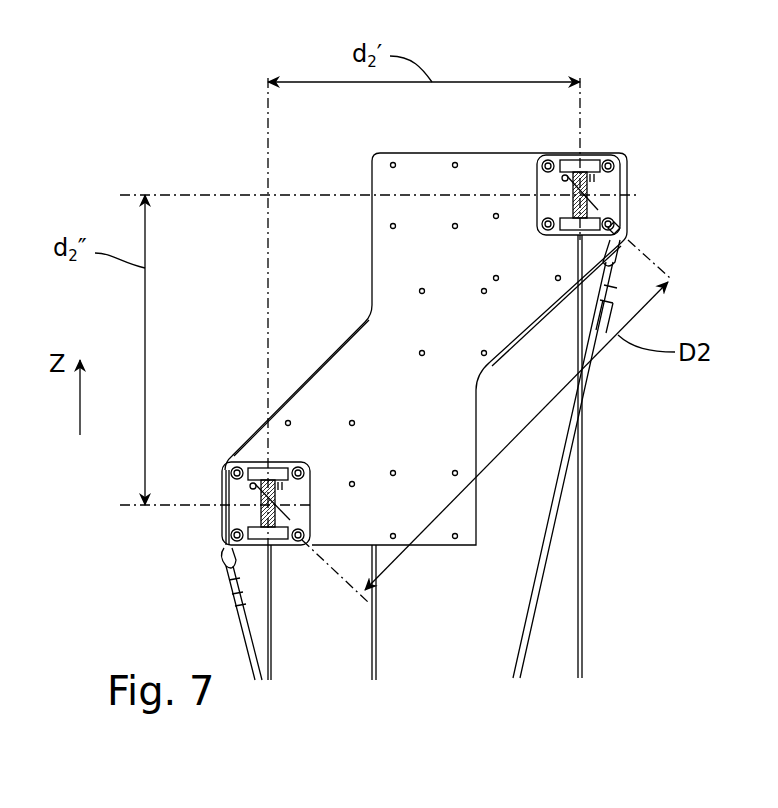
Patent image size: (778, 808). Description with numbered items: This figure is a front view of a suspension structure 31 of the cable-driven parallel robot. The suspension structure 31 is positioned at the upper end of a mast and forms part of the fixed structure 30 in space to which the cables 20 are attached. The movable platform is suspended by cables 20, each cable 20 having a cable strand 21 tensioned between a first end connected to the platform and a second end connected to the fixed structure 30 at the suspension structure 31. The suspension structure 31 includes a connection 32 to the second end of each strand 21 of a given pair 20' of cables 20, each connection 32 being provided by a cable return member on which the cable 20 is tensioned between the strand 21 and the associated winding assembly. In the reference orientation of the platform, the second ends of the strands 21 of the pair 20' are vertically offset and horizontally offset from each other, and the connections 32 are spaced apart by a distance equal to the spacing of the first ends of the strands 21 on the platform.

The cable 20 is at (423, 633).
The pair of cables 20' is at (424, 739).
The cable strand 21 is at (583, 527).
The fixed structure 30 is at (618, 135).
The suspension structure 31 is at (462, 152).
The connection 32 is at (606, 204).